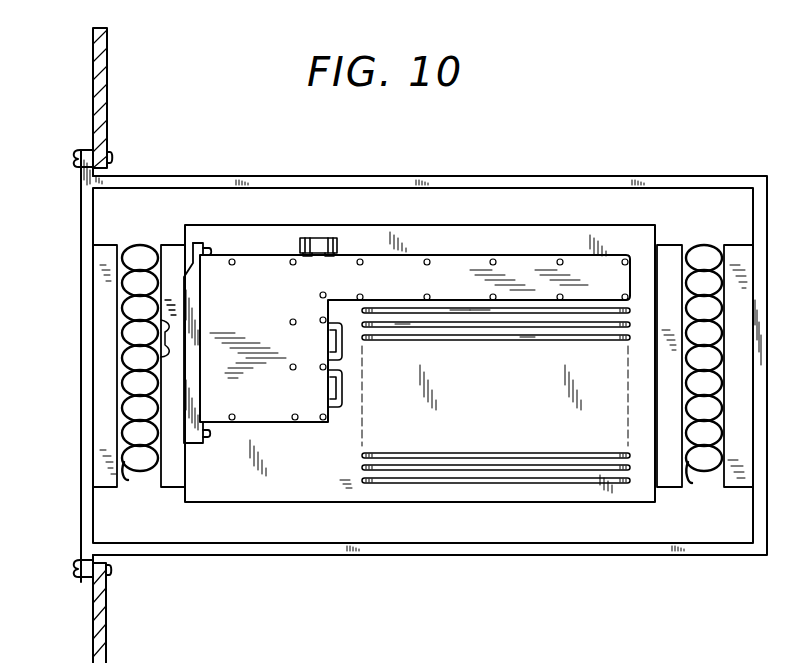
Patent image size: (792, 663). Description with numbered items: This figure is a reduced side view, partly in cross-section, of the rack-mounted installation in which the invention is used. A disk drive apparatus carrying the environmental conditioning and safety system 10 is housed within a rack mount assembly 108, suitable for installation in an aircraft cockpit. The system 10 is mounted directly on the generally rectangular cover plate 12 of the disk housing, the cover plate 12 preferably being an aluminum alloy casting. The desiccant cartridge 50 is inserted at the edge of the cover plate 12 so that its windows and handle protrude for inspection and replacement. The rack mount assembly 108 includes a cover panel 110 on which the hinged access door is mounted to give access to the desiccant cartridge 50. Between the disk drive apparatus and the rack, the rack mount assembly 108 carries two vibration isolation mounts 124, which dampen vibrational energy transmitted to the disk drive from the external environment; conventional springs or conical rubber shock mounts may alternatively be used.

The environmental conditioning and safety system 10 is at (479, 222).
The cover plate 12 is at (320, 492).
The desiccant cartridge 50 is at (190, 280).
The rack mount assembly 108 is at (583, 550).
The cover panel 110 is at (85, 210).
The vibration isolation mounts 124 is at (128, 480).